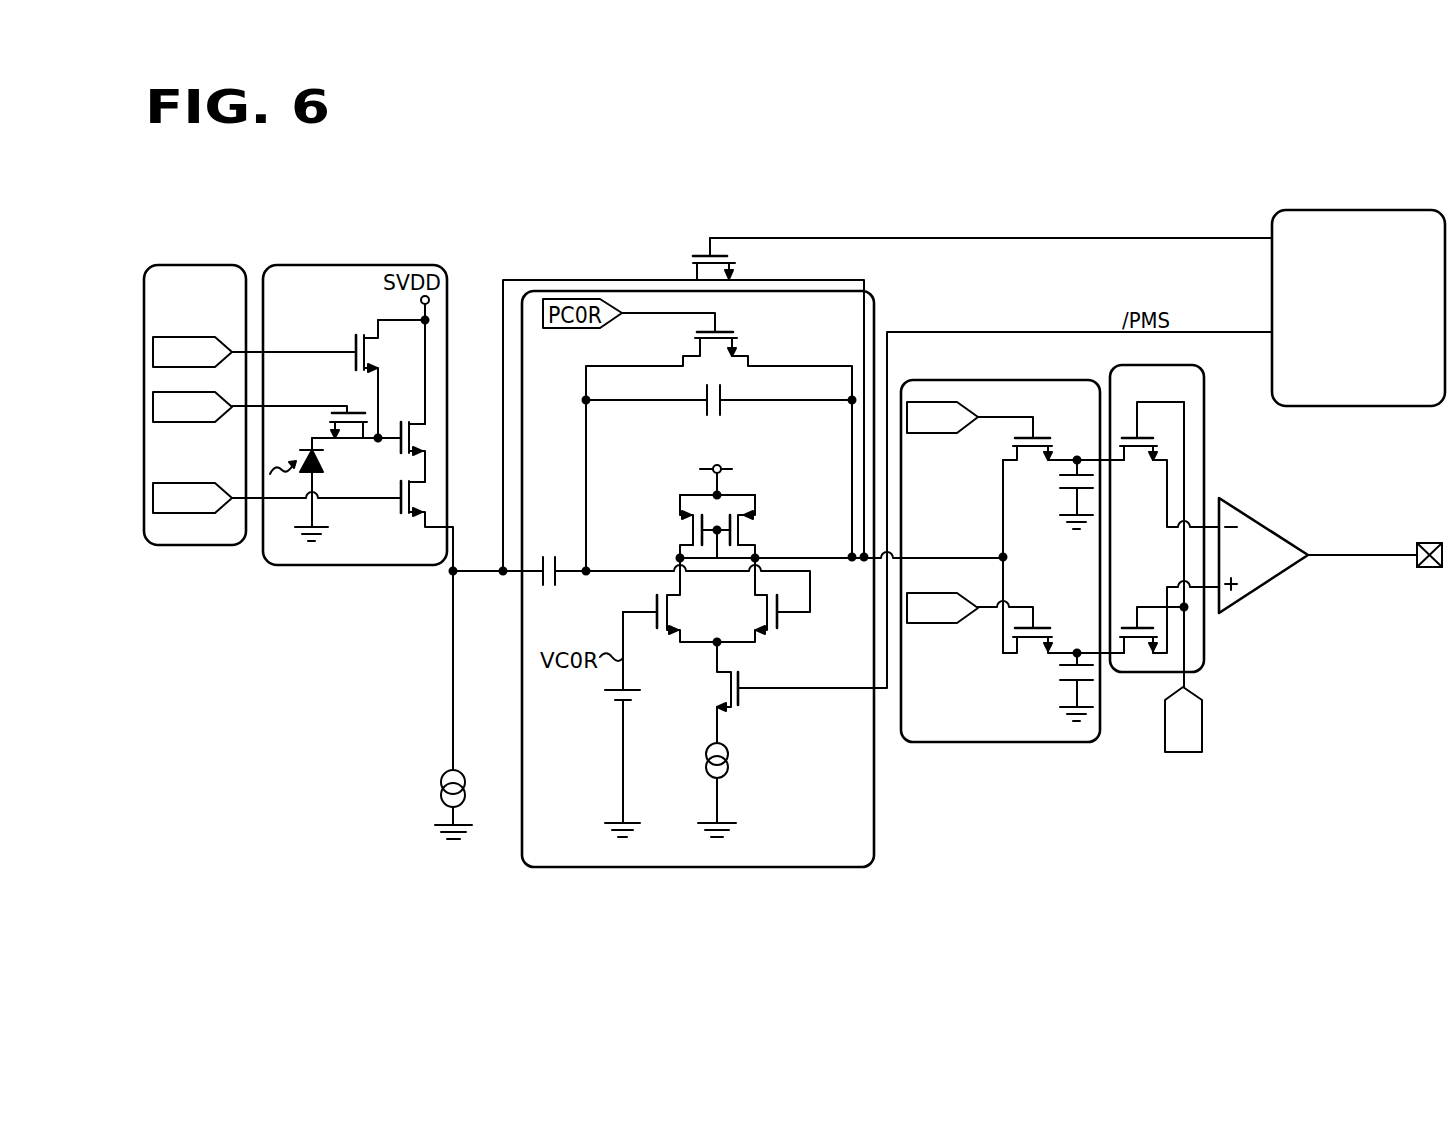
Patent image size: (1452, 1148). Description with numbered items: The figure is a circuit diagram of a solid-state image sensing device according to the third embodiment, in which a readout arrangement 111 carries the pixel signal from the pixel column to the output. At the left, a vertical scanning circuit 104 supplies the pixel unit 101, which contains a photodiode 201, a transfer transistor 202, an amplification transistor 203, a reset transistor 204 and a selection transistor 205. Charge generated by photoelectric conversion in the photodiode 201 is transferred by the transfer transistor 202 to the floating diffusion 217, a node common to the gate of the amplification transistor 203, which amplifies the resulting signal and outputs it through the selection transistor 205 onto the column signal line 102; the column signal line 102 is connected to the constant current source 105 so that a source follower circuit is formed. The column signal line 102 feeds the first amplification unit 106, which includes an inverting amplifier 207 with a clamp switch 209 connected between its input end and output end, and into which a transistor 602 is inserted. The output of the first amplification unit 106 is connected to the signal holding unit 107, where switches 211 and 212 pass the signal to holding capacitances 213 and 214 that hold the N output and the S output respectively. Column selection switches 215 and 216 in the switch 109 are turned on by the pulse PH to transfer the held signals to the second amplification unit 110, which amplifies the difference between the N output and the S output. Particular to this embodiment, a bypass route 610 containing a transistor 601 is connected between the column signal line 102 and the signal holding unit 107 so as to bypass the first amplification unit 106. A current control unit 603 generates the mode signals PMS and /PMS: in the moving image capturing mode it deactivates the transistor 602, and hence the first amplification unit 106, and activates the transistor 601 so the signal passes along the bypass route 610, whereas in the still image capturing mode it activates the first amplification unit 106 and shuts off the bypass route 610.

The pixel unit 101 is at (350, 265).
The column signal line 102 is at (453, 692).
The vertical scanning circuit 104 is at (195, 548).
The constant current source 105 is at (440, 785).
The first amplification unit 106 is at (742, 868).
The signal holding unit 107 is at (998, 743).
The switch 109 is at (1205, 443).
The second amplification unit 110 is at (1262, 520).
The readout circuit 111 is at (772, 199).
The photodiode 201 is at (317, 471).
The transfer transistor 202 is at (355, 410).
The amplification transistor 203 is at (420, 437).
The reset transistor 204 is at (353, 337).
The selection transistor 205 is at (407, 516).
The inverting amplifier 207 is at (778, 516).
The clamp switch 209 is at (738, 332).
The switch 211 is at (1013, 448).
The switch 212 is at (1033, 654).
The holding capacitance 213 is at (1065, 492).
The holding capacitance 214 is at (1062, 674).
The column selection switch 215 is at (1137, 458).
The column selection switch 216 is at (1136, 648).
The floating diffusion 217 is at (733, 768).
The transistor 601 is at (690, 263).
The transistor 602 is at (737, 708).
The current control unit 603 is at (1355, 407).
The bypass route 610 is at (840, 278).